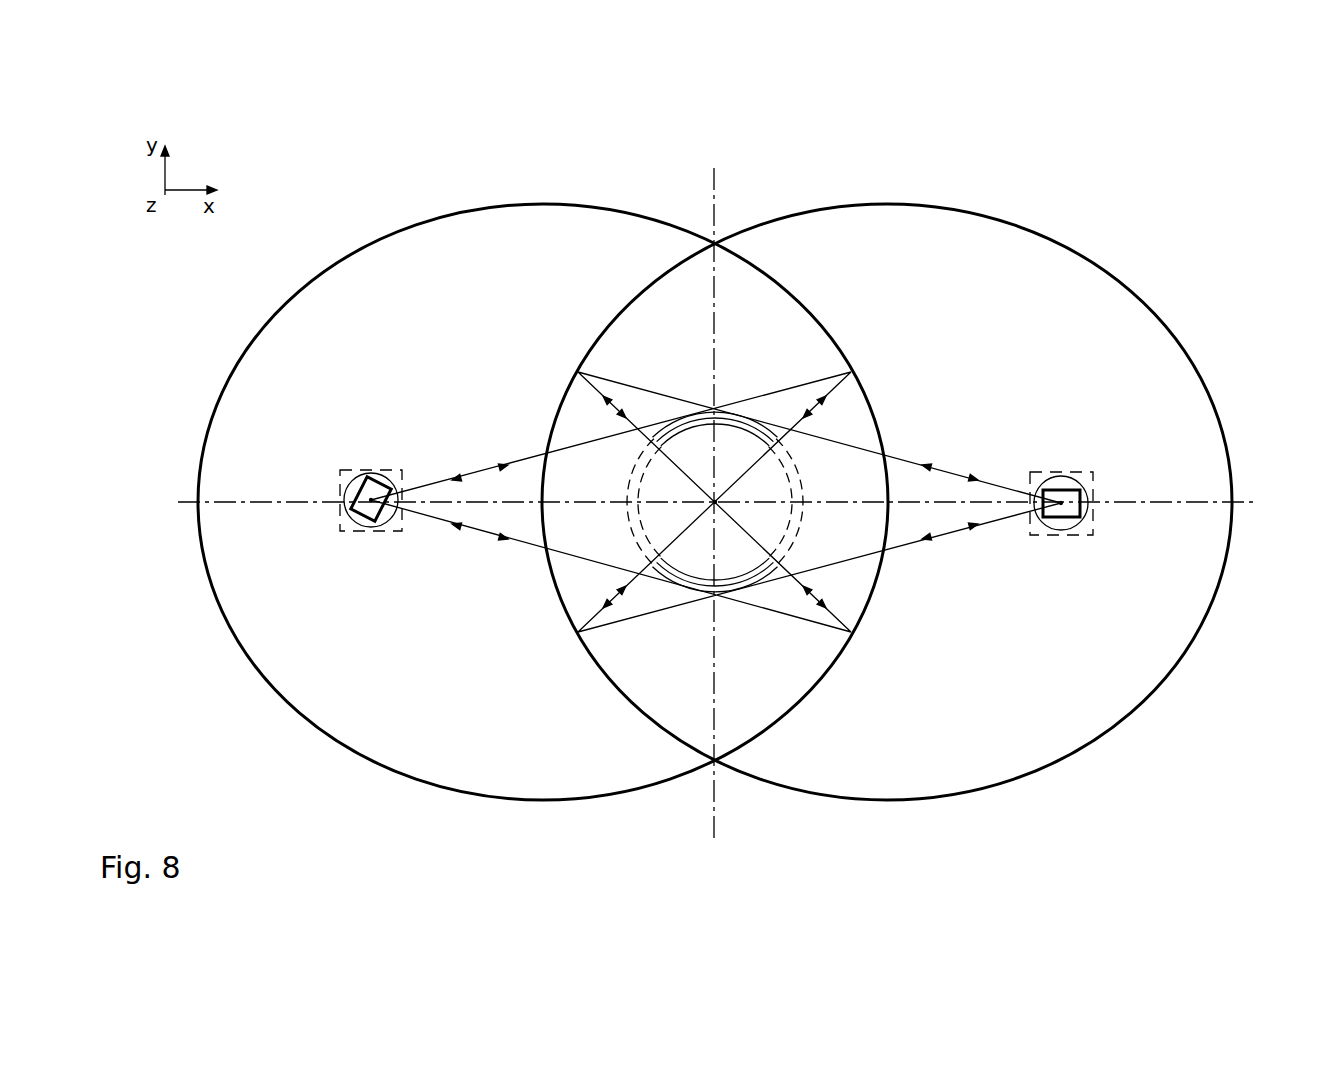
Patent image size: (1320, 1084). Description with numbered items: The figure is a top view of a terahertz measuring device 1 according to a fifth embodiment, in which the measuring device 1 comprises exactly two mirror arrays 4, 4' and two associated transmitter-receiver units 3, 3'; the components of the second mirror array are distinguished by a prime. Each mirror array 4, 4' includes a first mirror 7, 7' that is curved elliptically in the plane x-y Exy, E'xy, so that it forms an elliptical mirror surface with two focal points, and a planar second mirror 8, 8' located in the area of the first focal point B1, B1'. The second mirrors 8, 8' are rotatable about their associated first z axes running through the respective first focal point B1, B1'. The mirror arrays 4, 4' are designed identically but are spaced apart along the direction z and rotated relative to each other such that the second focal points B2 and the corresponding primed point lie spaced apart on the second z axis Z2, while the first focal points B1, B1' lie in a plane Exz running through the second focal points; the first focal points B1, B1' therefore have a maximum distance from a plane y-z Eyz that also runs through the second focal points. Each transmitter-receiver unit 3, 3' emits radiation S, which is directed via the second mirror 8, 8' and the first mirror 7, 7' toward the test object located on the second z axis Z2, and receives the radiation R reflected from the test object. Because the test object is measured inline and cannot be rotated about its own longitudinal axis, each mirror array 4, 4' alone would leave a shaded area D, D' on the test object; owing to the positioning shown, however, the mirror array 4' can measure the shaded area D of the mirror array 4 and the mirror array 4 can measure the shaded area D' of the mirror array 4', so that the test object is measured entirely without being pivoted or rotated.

The measuring device 1 is at (873, 182).
The transmitter-receiver unit 3 is at (1163, 539).
The second transmitter-receiver unit 3' is at (250, 536).
The mirror array 4 is at (917, 502).
The second mirror array 4' is at (495, 502).
The first mirror 7 is at (1261, 459).
The first mirror of the second mirror array 7' is at (150, 453).
The second mirror 8 is at (1161, 473).
The second mirror of the second mirror array 8' is at (252, 469).
The first focal point B1 is at (1182, 522).
The first focal point of the second mirror array B1' is at (237, 520).
The second focal point B2 is at (713, 506).
The shaded area D is at (617, 654).
The shaded area of the second mirror array D' is at (824, 654).
The plane x-z Exz is at (226, 500).
The plane y-z Eyz is at (716, 186).
The plane x-y Exy is at (993, 240).
The plane x-y of the second mirror array E'xy is at (442, 177).
The second z axis Z2 is at (716, 506).
The reflected radiation R is at (715, 505).
The emitted radiation S is at (716, 502).